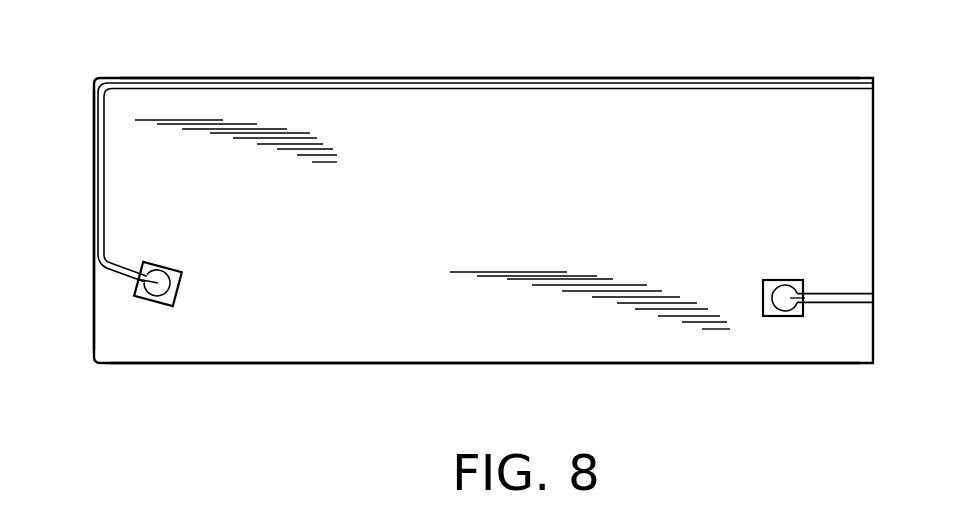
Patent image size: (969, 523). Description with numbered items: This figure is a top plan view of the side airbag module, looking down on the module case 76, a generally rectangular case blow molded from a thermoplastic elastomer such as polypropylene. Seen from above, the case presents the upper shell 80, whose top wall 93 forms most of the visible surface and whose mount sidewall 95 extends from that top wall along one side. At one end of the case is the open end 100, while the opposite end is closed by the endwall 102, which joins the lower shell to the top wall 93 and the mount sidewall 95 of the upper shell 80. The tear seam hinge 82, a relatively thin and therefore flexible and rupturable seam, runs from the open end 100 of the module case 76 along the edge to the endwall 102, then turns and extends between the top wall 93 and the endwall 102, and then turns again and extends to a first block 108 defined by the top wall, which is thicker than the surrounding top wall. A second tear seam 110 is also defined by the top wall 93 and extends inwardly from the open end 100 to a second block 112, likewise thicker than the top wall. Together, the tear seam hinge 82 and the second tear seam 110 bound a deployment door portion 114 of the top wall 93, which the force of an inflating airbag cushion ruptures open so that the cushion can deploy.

The module case 76 is at (326, 46).
The upper shell 80 is at (592, 102).
The tear seam hinge 82 is at (232, 82).
The top wall 93 is at (297, 356).
The mount sidewall 95 is at (520, 363).
The open end 100 is at (873, 158).
The endwall 102 is at (93, 318).
The first block 108 is at (172, 270).
The second tear seam 110 is at (835, 291).
The second block 112 is at (770, 280).
The deployment door portion 114 is at (747, 97).